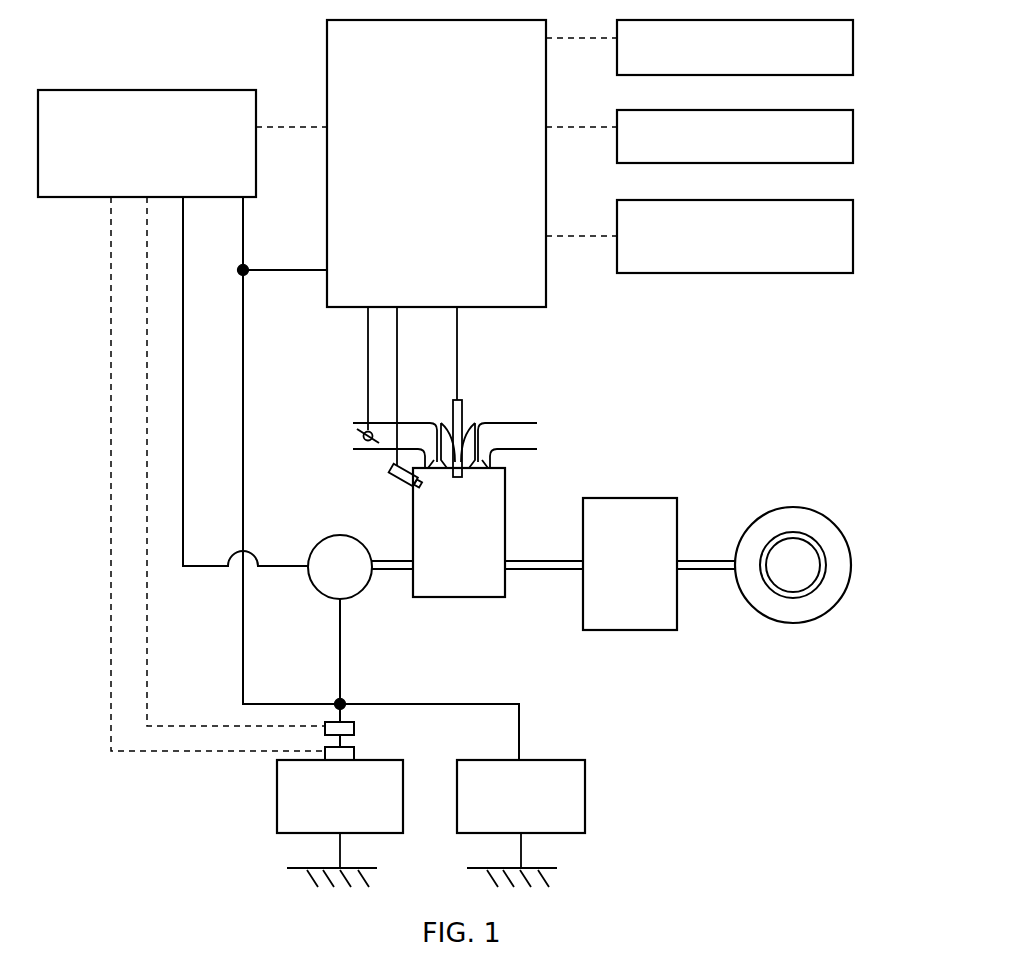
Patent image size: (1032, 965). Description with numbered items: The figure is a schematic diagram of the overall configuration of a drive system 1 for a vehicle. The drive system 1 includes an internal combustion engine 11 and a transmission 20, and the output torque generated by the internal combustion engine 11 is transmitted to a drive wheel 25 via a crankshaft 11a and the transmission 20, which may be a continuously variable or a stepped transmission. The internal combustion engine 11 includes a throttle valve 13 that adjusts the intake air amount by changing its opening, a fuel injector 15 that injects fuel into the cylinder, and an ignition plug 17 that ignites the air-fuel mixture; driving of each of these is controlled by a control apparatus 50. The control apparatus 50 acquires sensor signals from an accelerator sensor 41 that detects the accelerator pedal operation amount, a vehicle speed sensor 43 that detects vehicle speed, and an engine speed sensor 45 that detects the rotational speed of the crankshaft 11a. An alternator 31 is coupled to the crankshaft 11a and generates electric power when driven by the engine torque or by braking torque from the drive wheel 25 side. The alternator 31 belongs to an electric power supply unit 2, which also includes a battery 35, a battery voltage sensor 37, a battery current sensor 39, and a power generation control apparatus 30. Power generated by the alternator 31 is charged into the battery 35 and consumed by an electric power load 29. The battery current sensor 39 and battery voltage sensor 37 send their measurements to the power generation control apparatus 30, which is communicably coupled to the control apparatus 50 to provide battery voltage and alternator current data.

The drive system 1 is at (627, 650).
The electric power supply unit 2 is at (181, 776).
The internal combustion engine 11 is at (452, 597).
The crankshaft 11a is at (547, 560).
The throttle valve 13 is at (357, 432).
The fuel injector 15 is at (389, 473).
The ignition plug 17 is at (463, 425).
The transmission 20 is at (630, 510).
The drive wheel 25 is at (778, 518).
The electric power load 29 is at (585, 804).
The power generation control apparatus 30 is at (228, 90).
The alternator 31 is at (322, 553).
The battery 35 is at (277, 805).
The battery voltage sensor 37 is at (355, 751).
The battery current sensor 39 is at (355, 727).
The accelerator sensor 41 is at (853, 41).
The vehicle speed sensor 43 is at (853, 130).
The engine speed sensor 45 is at (853, 238).
The control apparatus 50 is at (523, 20).